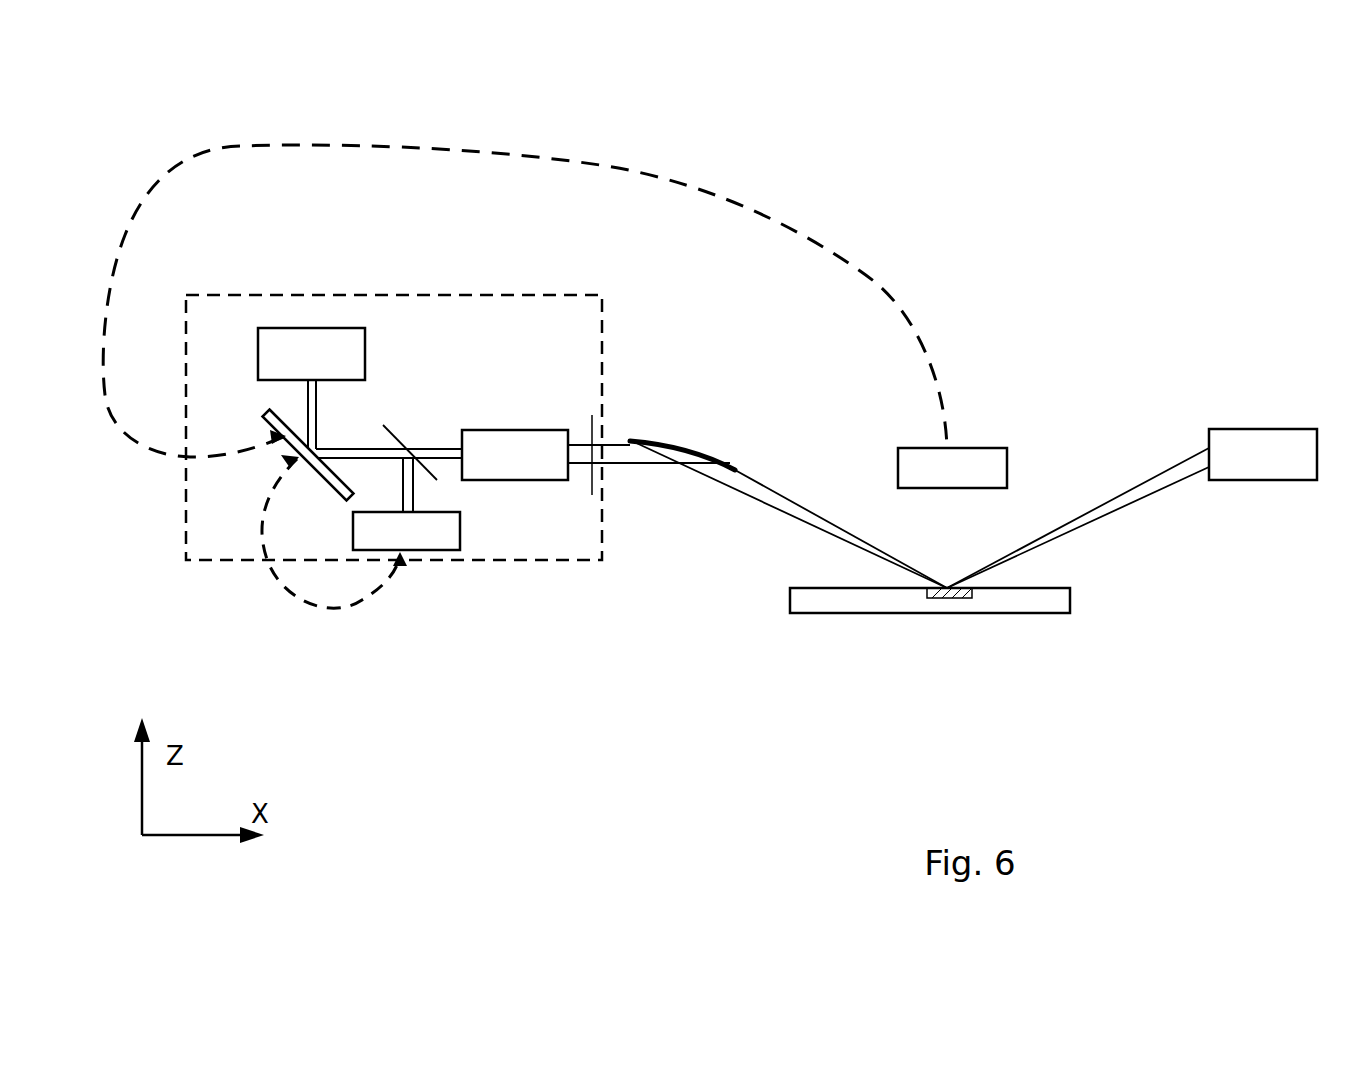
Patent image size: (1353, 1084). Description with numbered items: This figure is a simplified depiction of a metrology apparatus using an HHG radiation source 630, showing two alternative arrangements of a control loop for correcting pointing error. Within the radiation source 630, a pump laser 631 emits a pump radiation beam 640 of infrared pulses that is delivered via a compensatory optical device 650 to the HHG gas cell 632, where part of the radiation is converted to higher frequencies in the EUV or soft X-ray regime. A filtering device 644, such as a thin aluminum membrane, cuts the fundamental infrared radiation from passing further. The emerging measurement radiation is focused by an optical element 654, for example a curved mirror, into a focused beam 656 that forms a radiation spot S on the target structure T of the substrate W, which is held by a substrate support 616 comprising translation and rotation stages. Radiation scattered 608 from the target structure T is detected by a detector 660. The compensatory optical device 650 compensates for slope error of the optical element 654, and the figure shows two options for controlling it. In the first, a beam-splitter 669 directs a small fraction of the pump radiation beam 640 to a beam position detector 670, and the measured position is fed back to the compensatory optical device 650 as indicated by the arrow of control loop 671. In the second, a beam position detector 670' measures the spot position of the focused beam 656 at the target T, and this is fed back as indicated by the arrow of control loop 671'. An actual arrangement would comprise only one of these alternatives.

The radiation source 630 is at (207, 295).
The pump laser 631 is at (342, 328).
The HHG gas cell 632 is at (502, 430).
The pump radiation beam 640 is at (450, 449).
The filtering device 644 is at (590, 468).
The compensatory optical device 650 is at (312, 468).
The optical element 654 is at (693, 450).
The focused beam 656 is at (760, 492).
The detector 660 is at (1280, 477).
The beam-splitter 669 is at (385, 427).
The beam position detector 670 is at (406, 565).
The beam position detector 670' is at (980, 432).
The control loop 671 is at (334, 574).
The control loop 671' is at (540, 301).
The scattered radiation 608 is at (1100, 512).
The substrate support 616 is at (866, 652).
The substrate W is at (790, 600).
The target structure T is at (947, 590).
The radiation spot S is at (947, 588).